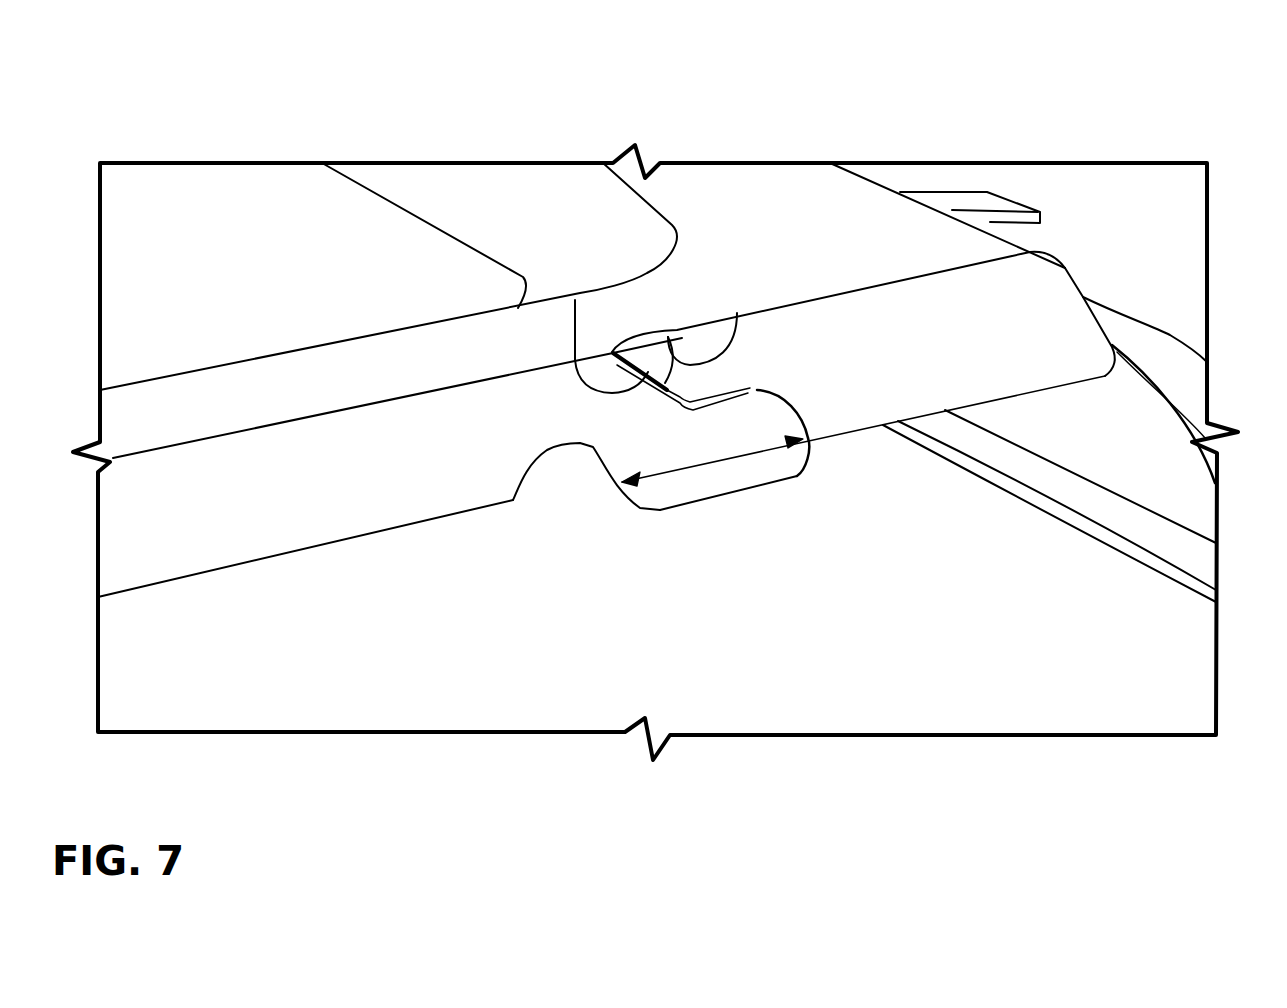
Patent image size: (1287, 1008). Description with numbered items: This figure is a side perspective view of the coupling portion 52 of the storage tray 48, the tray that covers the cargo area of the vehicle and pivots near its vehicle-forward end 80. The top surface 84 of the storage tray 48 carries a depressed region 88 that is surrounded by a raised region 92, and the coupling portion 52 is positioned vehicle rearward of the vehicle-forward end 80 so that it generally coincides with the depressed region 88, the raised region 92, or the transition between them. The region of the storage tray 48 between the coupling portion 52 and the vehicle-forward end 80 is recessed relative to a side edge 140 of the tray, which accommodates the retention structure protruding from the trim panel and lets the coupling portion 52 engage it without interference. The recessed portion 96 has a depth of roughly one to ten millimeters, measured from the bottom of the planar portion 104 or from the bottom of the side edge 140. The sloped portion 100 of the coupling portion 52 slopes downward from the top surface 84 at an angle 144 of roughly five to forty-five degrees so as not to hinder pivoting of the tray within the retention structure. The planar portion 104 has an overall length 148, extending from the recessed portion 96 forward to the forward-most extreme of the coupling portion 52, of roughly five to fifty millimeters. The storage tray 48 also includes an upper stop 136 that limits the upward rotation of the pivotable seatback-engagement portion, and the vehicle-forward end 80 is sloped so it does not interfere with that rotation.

The storage tray 48 is at (72, 158).
The coupling portion 52 is at (672, 510).
The vehicle-forward end 80 is at (1077, 281).
The top surface 84 is at (863, 223).
The depressed region 88 is at (187, 271).
The raised region 92 is at (693, 203).
The recessed portion 96 is at (565, 447).
The sloped portion 100 is at (575, 300).
The planar portion 104 is at (762, 465).
The upper stop 136 is at (987, 203).
The side edge 140 is at (143, 528).
The angle 144 is at (737, 313).
The overall length 148 is at (700, 467).